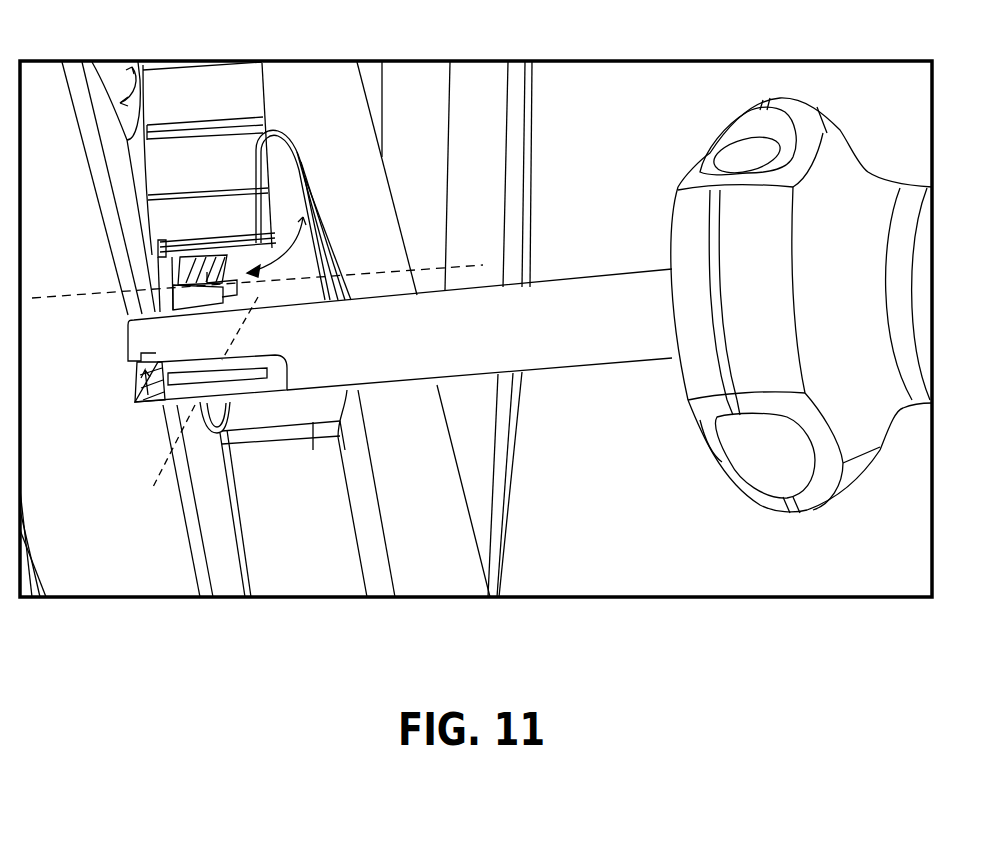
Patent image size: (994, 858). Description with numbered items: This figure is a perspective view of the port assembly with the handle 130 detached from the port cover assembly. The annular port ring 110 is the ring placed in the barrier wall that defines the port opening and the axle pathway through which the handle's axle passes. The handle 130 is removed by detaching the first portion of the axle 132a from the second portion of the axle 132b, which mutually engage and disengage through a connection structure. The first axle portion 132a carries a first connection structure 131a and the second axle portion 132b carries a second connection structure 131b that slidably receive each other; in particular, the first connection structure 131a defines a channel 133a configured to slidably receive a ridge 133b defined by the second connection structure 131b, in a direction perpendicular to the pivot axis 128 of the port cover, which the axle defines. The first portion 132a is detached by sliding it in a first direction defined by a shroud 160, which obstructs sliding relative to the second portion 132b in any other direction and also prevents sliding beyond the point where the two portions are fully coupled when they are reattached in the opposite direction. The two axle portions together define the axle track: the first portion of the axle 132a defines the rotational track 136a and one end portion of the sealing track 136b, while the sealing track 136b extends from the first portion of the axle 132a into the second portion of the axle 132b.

The annular port ring 110 is at (145, 577).
The pivot axis 128 is at (466, 263).
The handle 130 is at (683, 223).
The first connection structure 131a is at (135, 400).
The second connection structure 131b is at (325, 225).
The first portion of the axle 132a is at (557, 353).
The second portion of the axle 132b is at (178, 273).
The channel 133a is at (150, 398).
The ridge 133b is at (218, 258).
The rotational track 136a is at (293, 393).
The sealing track 136b is at (185, 301).
The shroud 160 is at (202, 170).